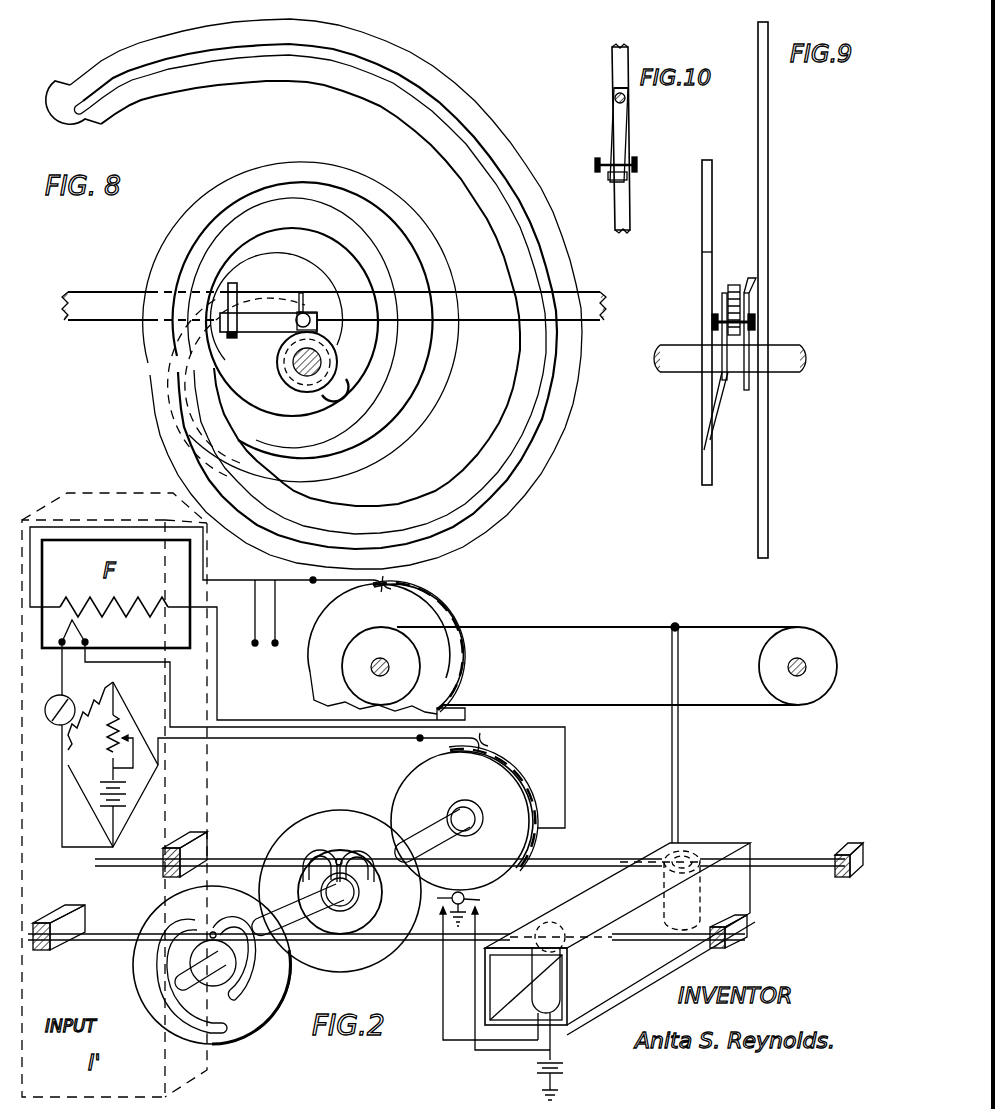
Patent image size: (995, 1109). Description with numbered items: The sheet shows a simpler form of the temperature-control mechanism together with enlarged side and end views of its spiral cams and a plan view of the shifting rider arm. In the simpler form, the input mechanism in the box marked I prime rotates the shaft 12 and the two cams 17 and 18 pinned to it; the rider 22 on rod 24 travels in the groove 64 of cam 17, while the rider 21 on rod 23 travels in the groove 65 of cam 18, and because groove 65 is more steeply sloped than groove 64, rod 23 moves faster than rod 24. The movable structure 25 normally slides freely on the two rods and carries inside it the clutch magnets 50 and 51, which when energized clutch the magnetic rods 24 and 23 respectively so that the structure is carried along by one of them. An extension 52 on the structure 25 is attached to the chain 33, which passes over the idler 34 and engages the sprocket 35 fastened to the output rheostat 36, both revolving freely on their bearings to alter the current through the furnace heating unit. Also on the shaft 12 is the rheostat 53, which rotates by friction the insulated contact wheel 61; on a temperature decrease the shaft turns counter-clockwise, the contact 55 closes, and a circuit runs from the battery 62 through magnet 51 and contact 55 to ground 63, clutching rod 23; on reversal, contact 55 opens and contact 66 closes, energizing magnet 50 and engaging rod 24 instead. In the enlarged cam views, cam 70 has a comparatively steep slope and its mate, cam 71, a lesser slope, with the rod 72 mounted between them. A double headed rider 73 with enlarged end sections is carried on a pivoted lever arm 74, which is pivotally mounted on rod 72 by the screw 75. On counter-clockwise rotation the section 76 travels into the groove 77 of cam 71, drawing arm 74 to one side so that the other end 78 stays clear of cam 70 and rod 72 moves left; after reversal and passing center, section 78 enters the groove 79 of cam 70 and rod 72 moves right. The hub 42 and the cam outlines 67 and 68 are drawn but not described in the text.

In FIG. 8, the cam 70 is at (445, 80).
In FIG. 9, the cam 70 is at (768, 176).
In FIG. 8, the cam 71 is at (318, 162).
In FIG. 9, the cam 71 is at (702, 192).
In FIG. 8, the groove 77 is at (362, 186).
In FIG. 8, the groove 79 is at (398, 78).
In FIG. 8, the rod 72 is at (582, 292).
In FIG. 10, the rod 72 is at (630, 212).
In FIG. 9, the rod 72 is at (748, 290).
In FIG. 8, the double headed rider 73 is at (306, 313).
In FIG. 10, the double headed rider 73 is at (611, 178).
In FIG. 8, the pivoted lever arm 74 is at (272, 333).
In FIG. 10, the pivoted lever arm 74 is at (611, 128).
In FIG. 8, the screw 75 is at (236, 284).
In FIG. 10, the screw 75 is at (625, 99).
In FIG. 10, the section 76 is at (598, 164).
In FIG. 9, the section 76 is at (712, 322).
In FIG. 10, the section 78 is at (636, 160).
In FIG. 9, the section 78 is at (757, 322).
In FIG. 8, the hub 42 is at (298, 374).
In FIG. 9, the shaft 12 is at (670, 372).
In FIG. 2, the shaft 12 is at (414, 827).
In FIG. 2, the cam 17 is at (181, 893).
In FIG. 2, the cam 18 is at (320, 812).
In FIG. 2, the rider 21 is at (340, 858).
In FIG. 2, the rider 22 is at (213, 932).
In FIG. 2, the rod 23 is at (568, 863).
In FIG. 2, the rod 24 is at (424, 945).
In FIG. 2, the movable structure 25 is at (708, 850).
In FIG. 2, the chain 33 is at (616, 627).
In FIG. 2, the idler 34 is at (758, 662).
In FIG. 2, the sprocket 35 is at (366, 628).
In FIG. 2, the rheostat 36 is at (422, 600).
In FIG. 2, the clutch magnet 50 is at (548, 991).
In FIG. 2, the clutch magnet 51 is at (682, 890).
In FIG. 2, the extension 52 is at (670, 745).
In FIG. 2, the rheostat 53 is at (406, 786).
In FIG. 2, the contact 55 is at (480, 910).
In FIG. 2, the insulated contact wheel 61 is at (480, 899).
In FIG. 2, the battery 62 is at (560, 1075).
In FIG. 2, the ground 63 is at (470, 927).
In FIG. 2, the groove 64 is at (240, 928).
In FIG. 2, the groove 65 is at (366, 850).
In FIG. 2, the contact 66 is at (479, 972).
In FIG. 2, the cam follower 67 is at (182, 920).
In FIG. 2, the cam follower 68 is at (318, 850).